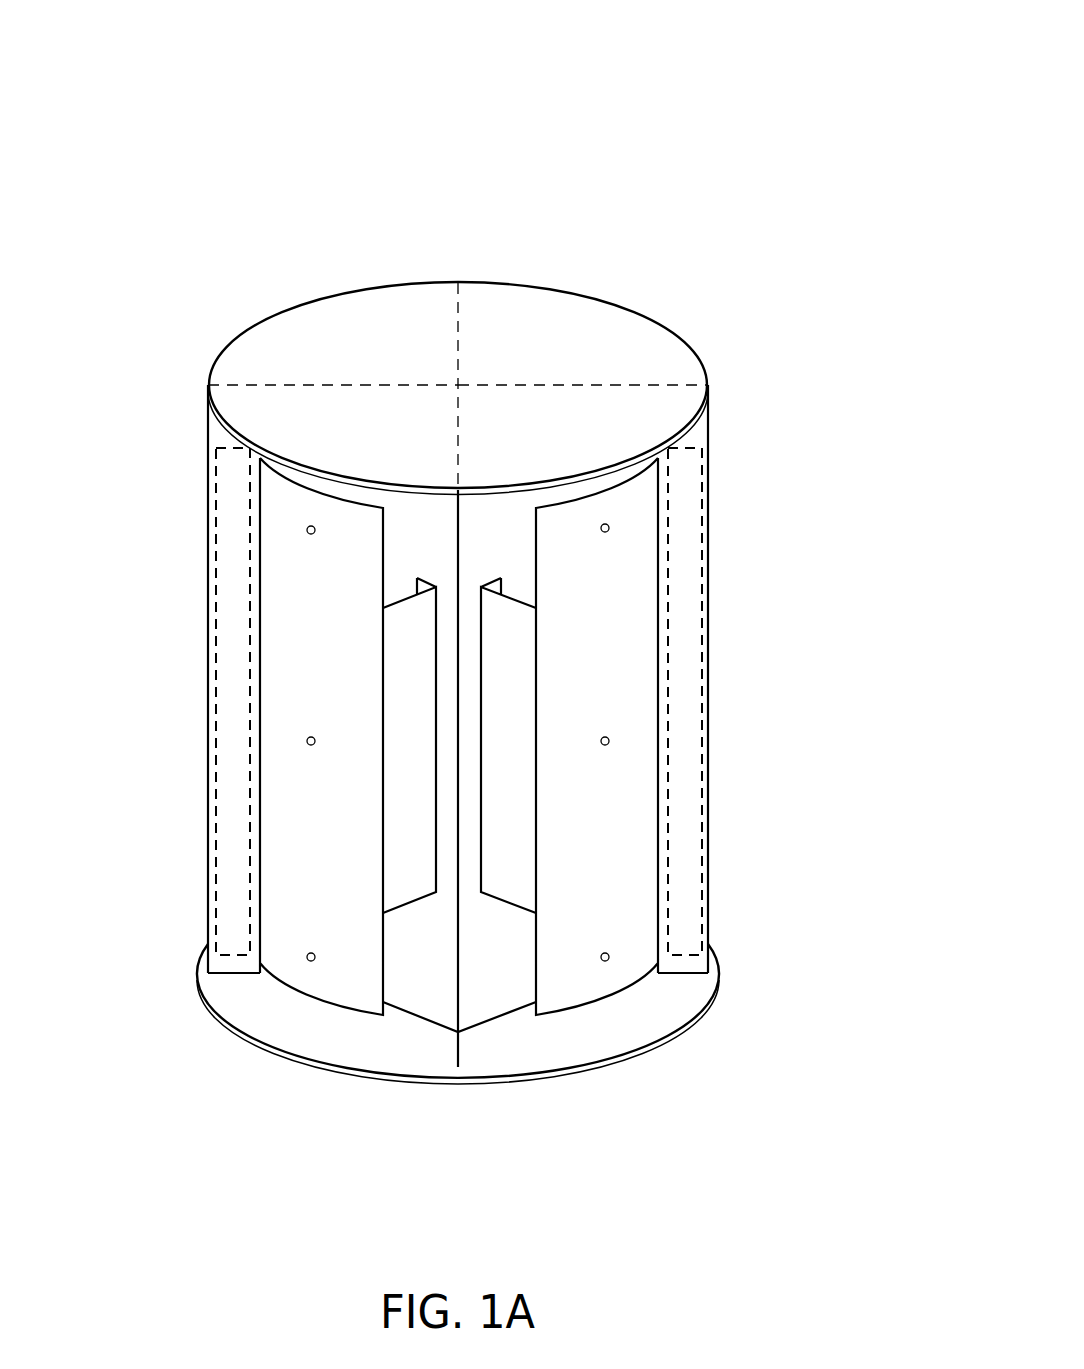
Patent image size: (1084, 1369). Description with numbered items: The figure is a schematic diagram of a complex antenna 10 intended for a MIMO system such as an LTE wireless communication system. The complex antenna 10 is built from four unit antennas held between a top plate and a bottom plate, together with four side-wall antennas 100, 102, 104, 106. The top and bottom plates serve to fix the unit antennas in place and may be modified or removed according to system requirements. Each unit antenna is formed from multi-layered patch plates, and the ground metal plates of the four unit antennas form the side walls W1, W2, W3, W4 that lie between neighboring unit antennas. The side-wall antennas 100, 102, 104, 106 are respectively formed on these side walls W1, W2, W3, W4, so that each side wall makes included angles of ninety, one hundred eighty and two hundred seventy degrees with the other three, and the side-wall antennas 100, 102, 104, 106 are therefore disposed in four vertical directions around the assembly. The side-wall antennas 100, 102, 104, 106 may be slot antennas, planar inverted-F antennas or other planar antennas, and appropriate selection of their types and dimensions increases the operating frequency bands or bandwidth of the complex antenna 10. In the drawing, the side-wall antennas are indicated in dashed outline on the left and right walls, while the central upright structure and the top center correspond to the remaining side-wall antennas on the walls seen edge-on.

The complex antenna 10 is at (724, 96).
The side-wall antenna 100 is at (230, 688).
The side-wall antenna 102 is at (458, 968).
The side-wall antenna 104 is at (688, 688).
The side-wall antenna 106 is at (458, 320).
The side wall W1 is at (283, 385).
The side wall W2 is at (458, 422).
The side wall W3 is at (633, 385).
The side wall W4 is at (458, 285).